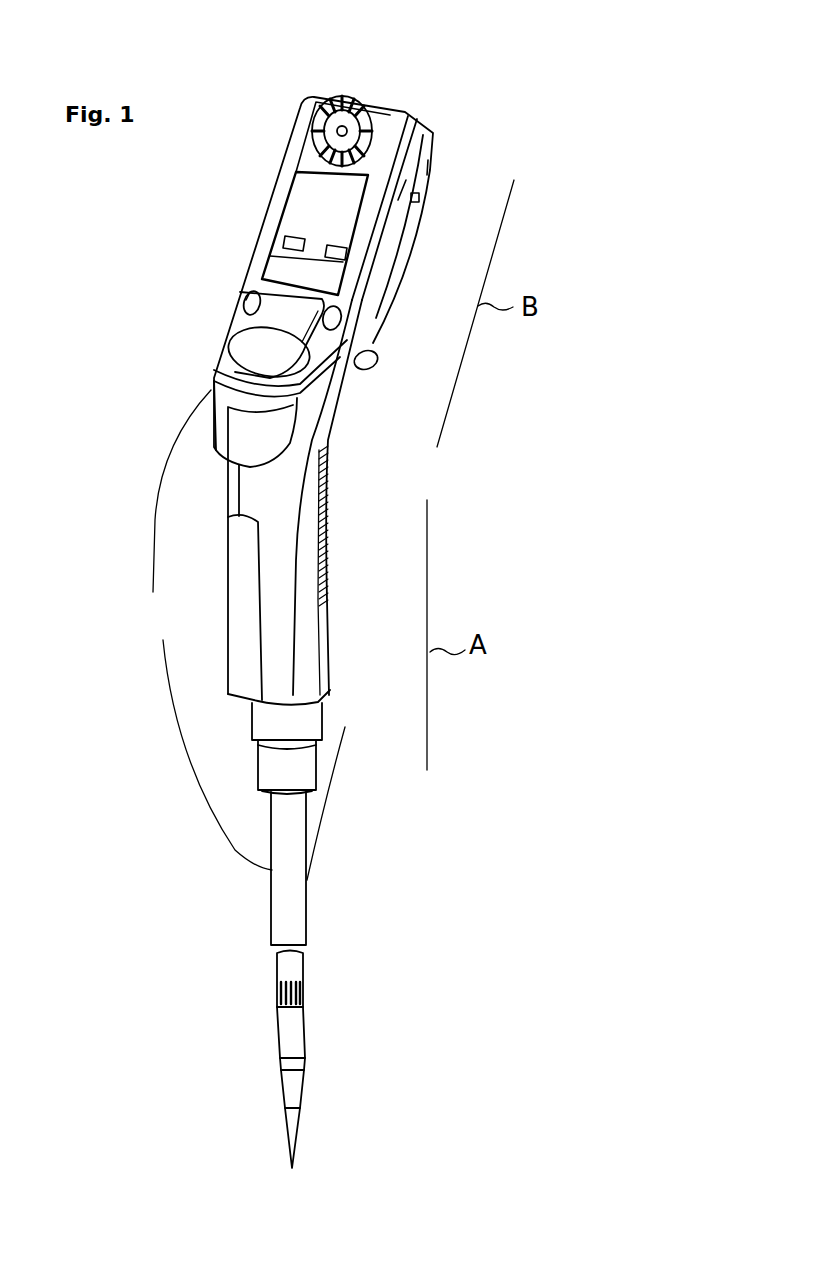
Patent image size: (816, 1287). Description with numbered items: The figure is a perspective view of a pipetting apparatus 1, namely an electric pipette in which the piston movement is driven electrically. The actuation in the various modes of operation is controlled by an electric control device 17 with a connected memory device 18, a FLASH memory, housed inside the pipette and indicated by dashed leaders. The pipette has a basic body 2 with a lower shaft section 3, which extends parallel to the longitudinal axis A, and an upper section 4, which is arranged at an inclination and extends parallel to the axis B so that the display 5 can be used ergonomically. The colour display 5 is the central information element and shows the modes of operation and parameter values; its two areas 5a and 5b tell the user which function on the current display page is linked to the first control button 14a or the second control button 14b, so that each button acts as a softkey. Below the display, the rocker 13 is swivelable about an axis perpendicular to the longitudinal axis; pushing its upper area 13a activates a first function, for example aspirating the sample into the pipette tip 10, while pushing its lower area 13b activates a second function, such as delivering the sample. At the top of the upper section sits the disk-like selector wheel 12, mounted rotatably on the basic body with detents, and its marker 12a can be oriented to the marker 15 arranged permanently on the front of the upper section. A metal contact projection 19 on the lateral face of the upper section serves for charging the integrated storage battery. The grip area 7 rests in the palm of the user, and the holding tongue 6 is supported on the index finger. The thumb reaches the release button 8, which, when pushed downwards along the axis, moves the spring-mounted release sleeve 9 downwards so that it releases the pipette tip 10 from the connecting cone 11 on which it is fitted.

The pipetting apparatus 1 is at (586, 116).
The basic body 2 is at (227, 638).
The shaft section 3 is at (330, 645).
The upper section 4 is at (258, 225).
The display 5 is at (297, 205).
The display area 5a is at (302, 236).
The display area 5b is at (347, 250).
The holding tongue 6 is at (370, 377).
The grip area 7 is at (331, 511).
The release button 8 is at (222, 382).
The release sleeve 9 is at (308, 900).
The pipette tip 10 is at (303, 1090).
The connecting cone 11 is at (310, 948).
The selector wheel 12 is at (368, 88).
The marker 12a is at (343, 90).
The rocker 13 is at (238, 316).
The upper area 13a is at (240, 306).
The lower area 13b is at (243, 343).
The first control button 14a is at (240, 297).
The second control button 14b is at (345, 317).
The marker 15 is at (296, 116).
The electric control device 17 is at (407, 178).
The memory device 18 is at (427, 158).
The metal contact projection 19 is at (422, 197).